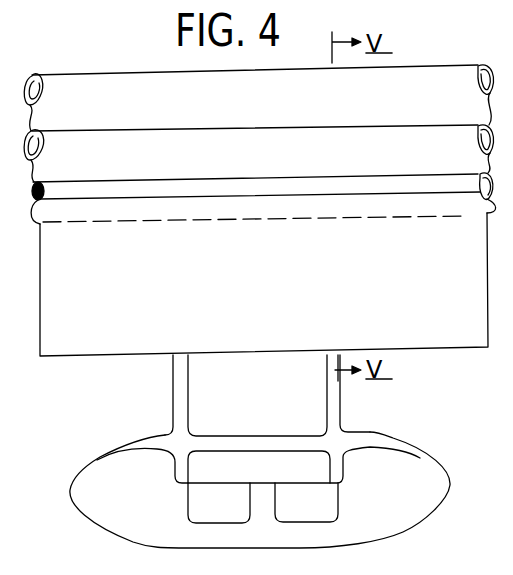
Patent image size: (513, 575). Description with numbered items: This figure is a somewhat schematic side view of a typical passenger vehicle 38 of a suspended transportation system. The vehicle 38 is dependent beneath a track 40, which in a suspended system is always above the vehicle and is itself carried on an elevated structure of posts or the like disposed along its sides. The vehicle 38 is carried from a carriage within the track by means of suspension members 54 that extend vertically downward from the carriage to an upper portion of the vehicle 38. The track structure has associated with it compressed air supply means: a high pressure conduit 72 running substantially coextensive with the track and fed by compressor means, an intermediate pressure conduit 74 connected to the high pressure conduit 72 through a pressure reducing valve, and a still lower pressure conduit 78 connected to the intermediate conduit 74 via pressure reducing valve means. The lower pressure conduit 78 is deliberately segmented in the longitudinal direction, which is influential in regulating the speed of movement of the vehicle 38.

The track 40 is at (93, 365).
The high pressure conduit 72 is at (457, 67).
The intermediate pressure conduit 74 is at (387, 97).
The lower pressure conduit 78 is at (263, 190).
The suspension members 54 is at (333, 397).
The passenger vehicle 38 is at (447, 478).